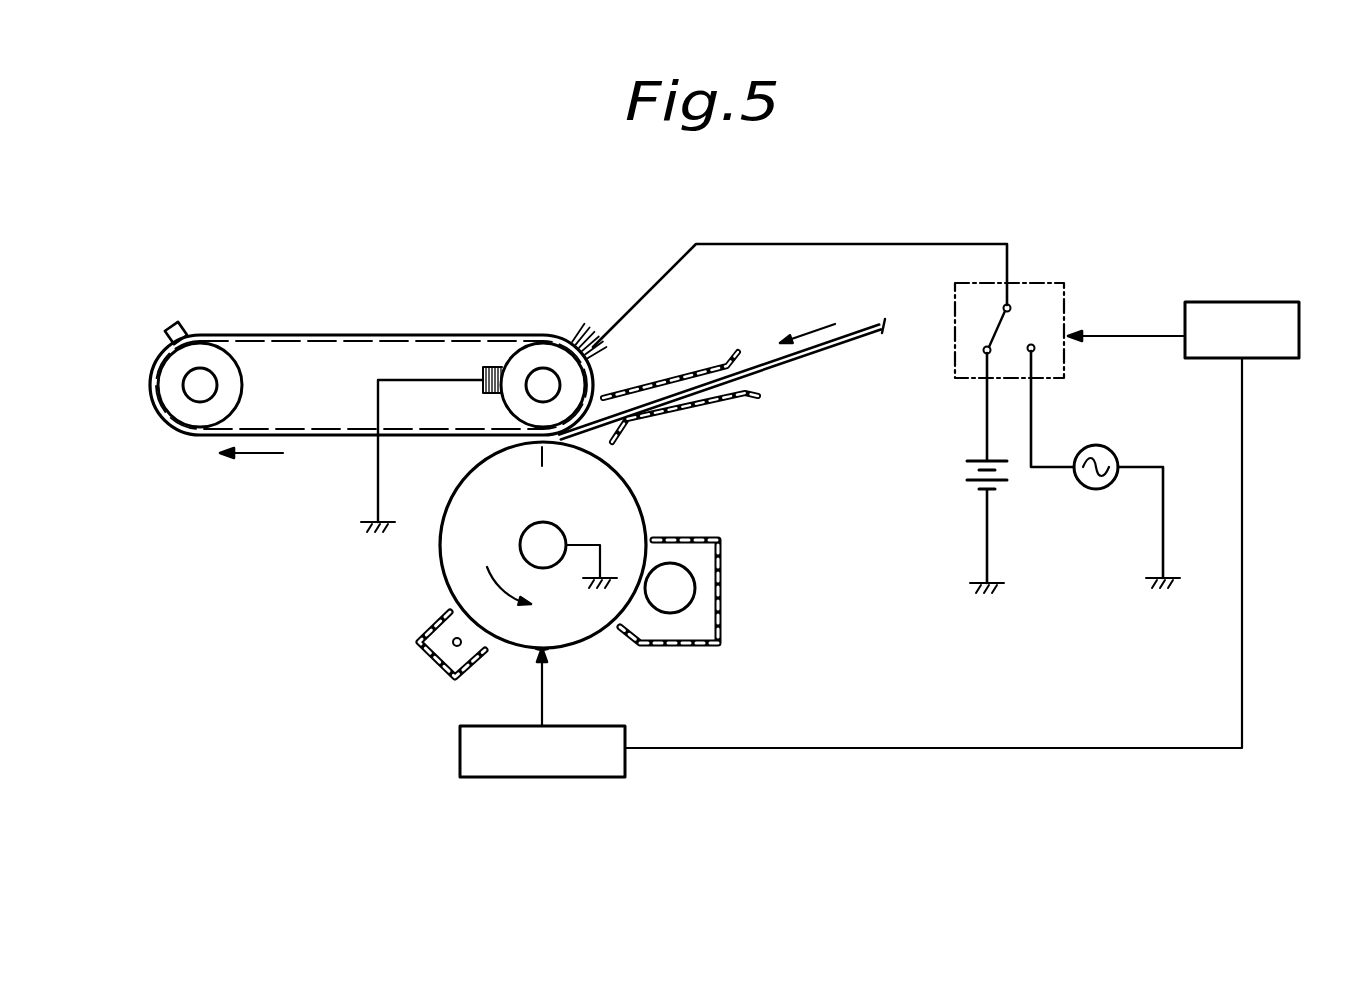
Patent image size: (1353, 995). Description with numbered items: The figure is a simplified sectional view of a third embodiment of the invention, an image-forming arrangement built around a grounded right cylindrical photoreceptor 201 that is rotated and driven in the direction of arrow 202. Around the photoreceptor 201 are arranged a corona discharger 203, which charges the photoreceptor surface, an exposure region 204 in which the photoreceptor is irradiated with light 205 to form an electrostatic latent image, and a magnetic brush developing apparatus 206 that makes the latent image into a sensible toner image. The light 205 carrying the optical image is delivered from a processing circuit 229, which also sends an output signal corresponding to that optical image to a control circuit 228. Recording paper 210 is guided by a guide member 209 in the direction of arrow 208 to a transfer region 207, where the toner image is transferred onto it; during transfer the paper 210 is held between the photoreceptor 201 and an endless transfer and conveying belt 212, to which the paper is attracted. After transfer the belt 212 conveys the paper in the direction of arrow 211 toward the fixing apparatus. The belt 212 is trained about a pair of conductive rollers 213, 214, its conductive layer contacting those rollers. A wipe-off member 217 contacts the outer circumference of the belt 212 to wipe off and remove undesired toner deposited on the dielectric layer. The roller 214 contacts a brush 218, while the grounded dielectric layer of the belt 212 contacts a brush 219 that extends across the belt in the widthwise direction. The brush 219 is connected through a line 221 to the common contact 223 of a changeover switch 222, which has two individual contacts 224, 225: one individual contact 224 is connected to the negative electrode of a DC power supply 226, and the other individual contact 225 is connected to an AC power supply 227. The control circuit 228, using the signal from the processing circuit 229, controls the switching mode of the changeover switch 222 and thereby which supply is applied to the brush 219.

The photoreceptor 201 is at (465, 540).
The arrow 202 is at (500, 596).
The corona discharger 203 is at (435, 658).
The exposure region 204 is at (542, 650).
The light 205 is at (546, 692).
The magnetic brush developing apparatus 206 is at (678, 592).
The transfer region 207 is at (538, 478).
The arrow 208 is at (812, 334).
The guide member 209 is at (668, 387).
The recording paper 210 is at (794, 366).
The arrow 211 is at (251, 455).
The endless transfer and conveying belt 212 is at (345, 333).
The conductive roller 213 is at (178, 375).
The conductive roller 214 is at (530, 336).
The wipe-off member 217 is at (178, 325).
The brush 218 is at (472, 333).
The brush 219 is at (594, 333).
The line 221 is at (855, 243).
The changeover switch 222 is at (958, 303).
The common contact 223 is at (1010, 305).
The individual contact 224 is at (984, 353).
The individual contact 225 is at (1034, 352).
The DC power supply 226 is at (968, 460).
The AC power supply 227 is at (1092, 487).
The control circuit 228 is at (1238, 303).
The processing circuit 229 is at (477, 765).